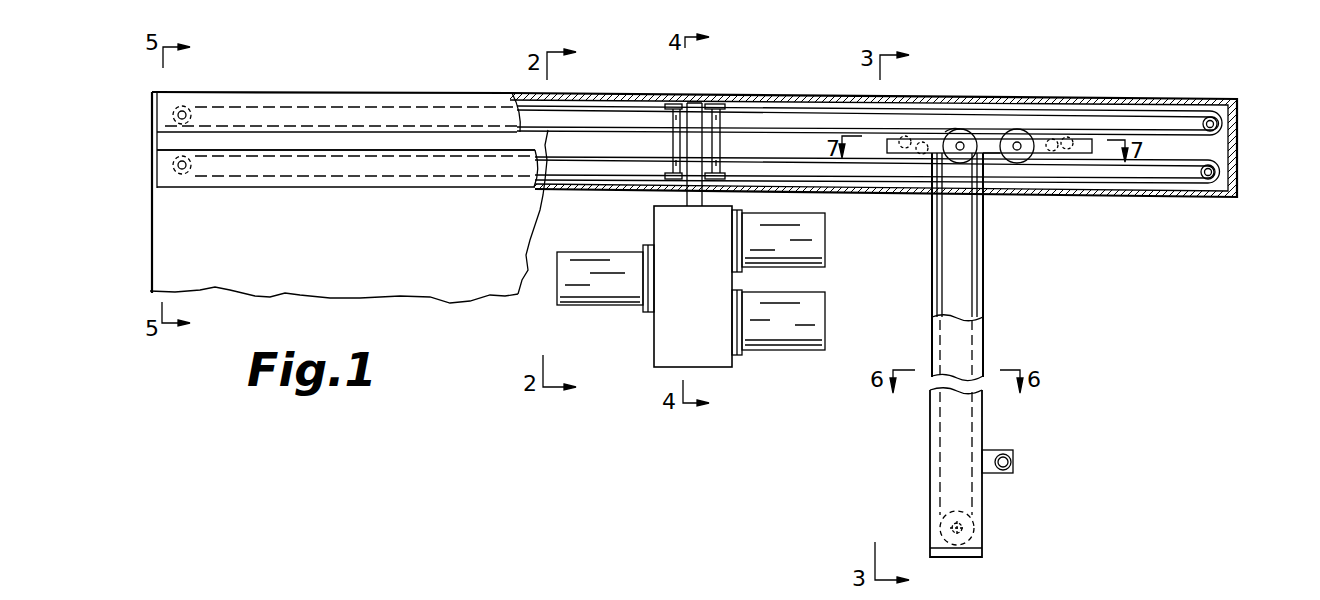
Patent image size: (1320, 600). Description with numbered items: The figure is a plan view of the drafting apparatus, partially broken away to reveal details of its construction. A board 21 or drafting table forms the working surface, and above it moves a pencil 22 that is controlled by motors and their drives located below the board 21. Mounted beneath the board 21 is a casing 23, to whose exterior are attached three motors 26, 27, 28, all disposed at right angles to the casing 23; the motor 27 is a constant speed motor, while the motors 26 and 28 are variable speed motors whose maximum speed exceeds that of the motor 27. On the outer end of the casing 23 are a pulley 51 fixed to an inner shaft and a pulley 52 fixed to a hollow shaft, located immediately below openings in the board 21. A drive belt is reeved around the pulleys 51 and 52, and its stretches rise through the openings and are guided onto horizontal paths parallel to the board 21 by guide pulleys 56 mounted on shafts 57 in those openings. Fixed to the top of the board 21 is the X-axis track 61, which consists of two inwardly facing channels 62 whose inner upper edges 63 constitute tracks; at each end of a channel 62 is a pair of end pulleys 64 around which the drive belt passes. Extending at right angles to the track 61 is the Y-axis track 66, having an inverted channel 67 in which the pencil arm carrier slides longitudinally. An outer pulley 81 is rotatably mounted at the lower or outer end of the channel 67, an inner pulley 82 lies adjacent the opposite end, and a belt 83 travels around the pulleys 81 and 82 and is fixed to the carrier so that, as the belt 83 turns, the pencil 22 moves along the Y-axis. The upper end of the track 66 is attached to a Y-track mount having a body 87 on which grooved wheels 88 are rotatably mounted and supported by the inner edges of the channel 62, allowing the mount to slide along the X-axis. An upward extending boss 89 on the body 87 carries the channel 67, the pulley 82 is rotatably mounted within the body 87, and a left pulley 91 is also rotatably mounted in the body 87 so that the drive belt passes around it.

The board 21 is at (423, 261).
The pencil 22 is at (1003, 454).
The casing 23 is at (706, 297).
The motor 26 is at (822, 237).
The motor 27 is at (616, 305).
The motor 28 is at (822, 320).
The pulley 51 is at (693, 104).
The pulley 52 is at (690, 195).
The guide pulleys 56 is at (672, 104).
The shafts 57 is at (712, 140).
The X-axis track 61 is at (340, 92).
The channels 62 is at (260, 92).
The inner upper edges 63 is at (268, 133).
The end pulleys 64 is at (205, 100).
The Y-axis track 66 is at (922, 480).
The inverted channel 67 is at (953, 422).
The outer pulley 81 is at (975, 525).
The inner pulley 82 is at (960, 128).
The belt 83 is at (945, 277).
The body 87 is at (990, 153).
The grooved wheels 88 is at (918, 154).
The boss 89 is at (990, 139).
The left pulley 91 is at (950, 134).